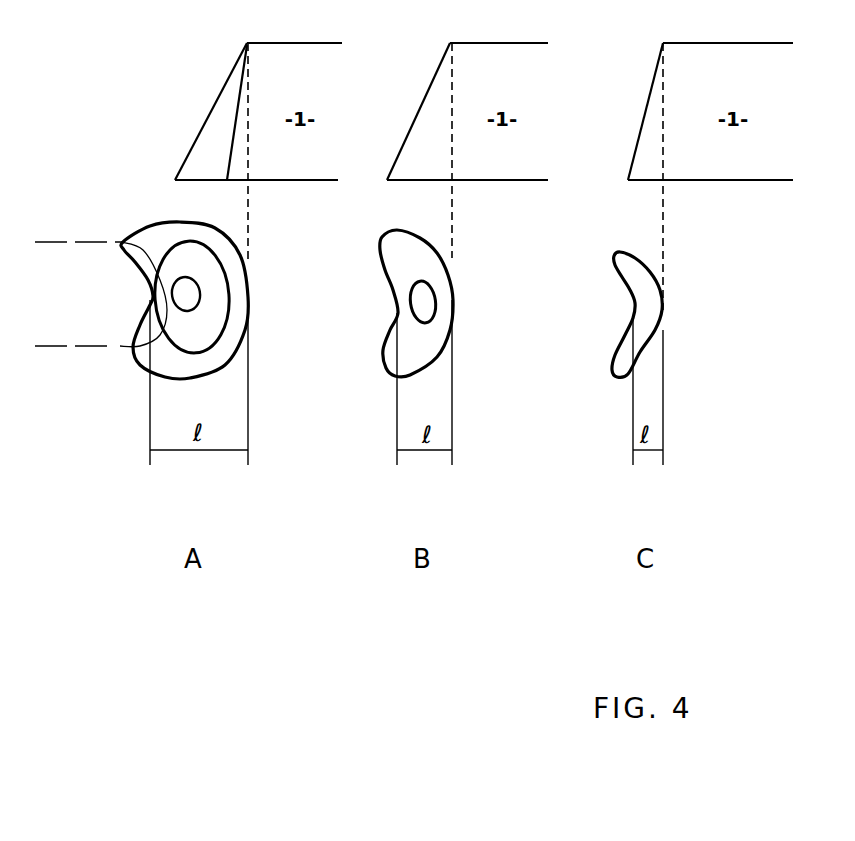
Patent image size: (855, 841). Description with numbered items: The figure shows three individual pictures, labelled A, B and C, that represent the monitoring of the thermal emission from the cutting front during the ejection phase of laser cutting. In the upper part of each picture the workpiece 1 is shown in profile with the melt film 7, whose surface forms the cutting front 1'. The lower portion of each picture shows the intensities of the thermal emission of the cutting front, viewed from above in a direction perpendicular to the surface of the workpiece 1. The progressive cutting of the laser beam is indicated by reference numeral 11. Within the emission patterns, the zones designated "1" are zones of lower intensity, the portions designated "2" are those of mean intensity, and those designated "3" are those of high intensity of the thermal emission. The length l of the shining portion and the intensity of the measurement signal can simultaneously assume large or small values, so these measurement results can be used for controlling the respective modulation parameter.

The workpiece 1 is at (391, 293).
The cutting front 1' is at (415, 107).
The zone of mean intensity 2 is at (294, 292).
The zone of high intensity 3 is at (185, 287).
The melt film 7 is at (207, 157).
The progressive cutting of the laser beam 11 is at (100, 347).